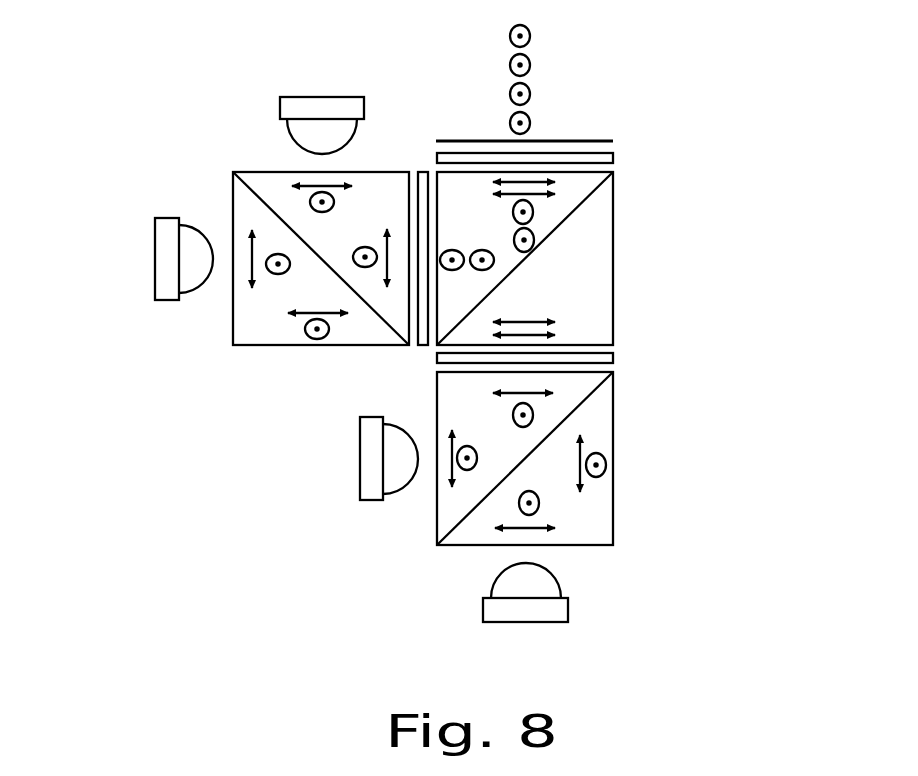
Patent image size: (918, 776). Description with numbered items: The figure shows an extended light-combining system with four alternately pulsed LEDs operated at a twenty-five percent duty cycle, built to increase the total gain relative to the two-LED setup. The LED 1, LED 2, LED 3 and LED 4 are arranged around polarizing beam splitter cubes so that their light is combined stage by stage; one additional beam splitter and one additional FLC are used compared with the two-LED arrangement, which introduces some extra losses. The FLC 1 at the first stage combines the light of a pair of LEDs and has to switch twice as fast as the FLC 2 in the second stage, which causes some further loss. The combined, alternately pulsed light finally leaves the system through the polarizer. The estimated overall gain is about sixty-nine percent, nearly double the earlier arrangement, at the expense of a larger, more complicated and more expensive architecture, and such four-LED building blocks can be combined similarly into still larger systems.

The light emitting diode LED 1 is at (546, 615).
The light emitting diode LED 2 is at (311, 458).
The light emitting diode LED 3 is at (115, 259).
The light emitting diode LED 4 is at (298, 103).
The first stage ferroelectric liquid crystal cell FLC 1 is at (420, 345).
The second stage ferroelectric liquid crystal cell FLC 2 is at (613, 158).
The element polarizer is at (600, 141).